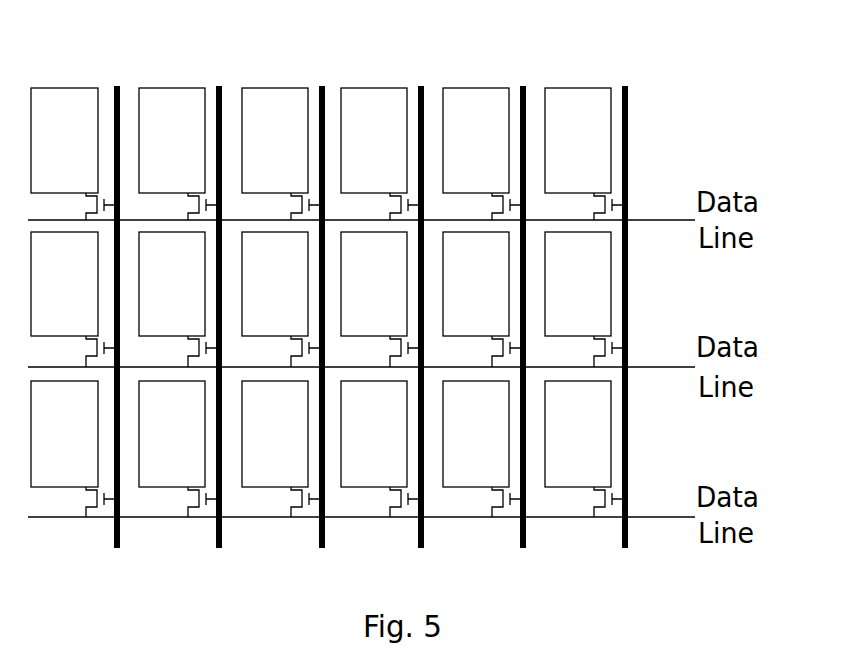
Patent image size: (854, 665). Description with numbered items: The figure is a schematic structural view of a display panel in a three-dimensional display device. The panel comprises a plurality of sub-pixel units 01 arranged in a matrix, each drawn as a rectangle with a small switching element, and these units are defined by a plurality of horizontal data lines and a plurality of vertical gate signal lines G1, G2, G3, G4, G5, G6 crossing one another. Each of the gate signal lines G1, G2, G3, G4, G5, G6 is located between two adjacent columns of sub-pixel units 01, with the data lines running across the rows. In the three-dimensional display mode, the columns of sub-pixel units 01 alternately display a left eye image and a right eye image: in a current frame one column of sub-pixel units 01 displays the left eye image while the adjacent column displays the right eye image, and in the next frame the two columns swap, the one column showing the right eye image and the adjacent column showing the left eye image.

The sub-pixel unit 01 is at (75, 88).
The gate signal line G1 is at (115, 334).
The gate signal line G2 is at (219, 334).
The gate signal line G3 is at (322, 334).
The gate signal line G4 is at (421, 334).
The gate signal line G5 is at (523, 334).
The gate signal line G6 is at (625, 334).